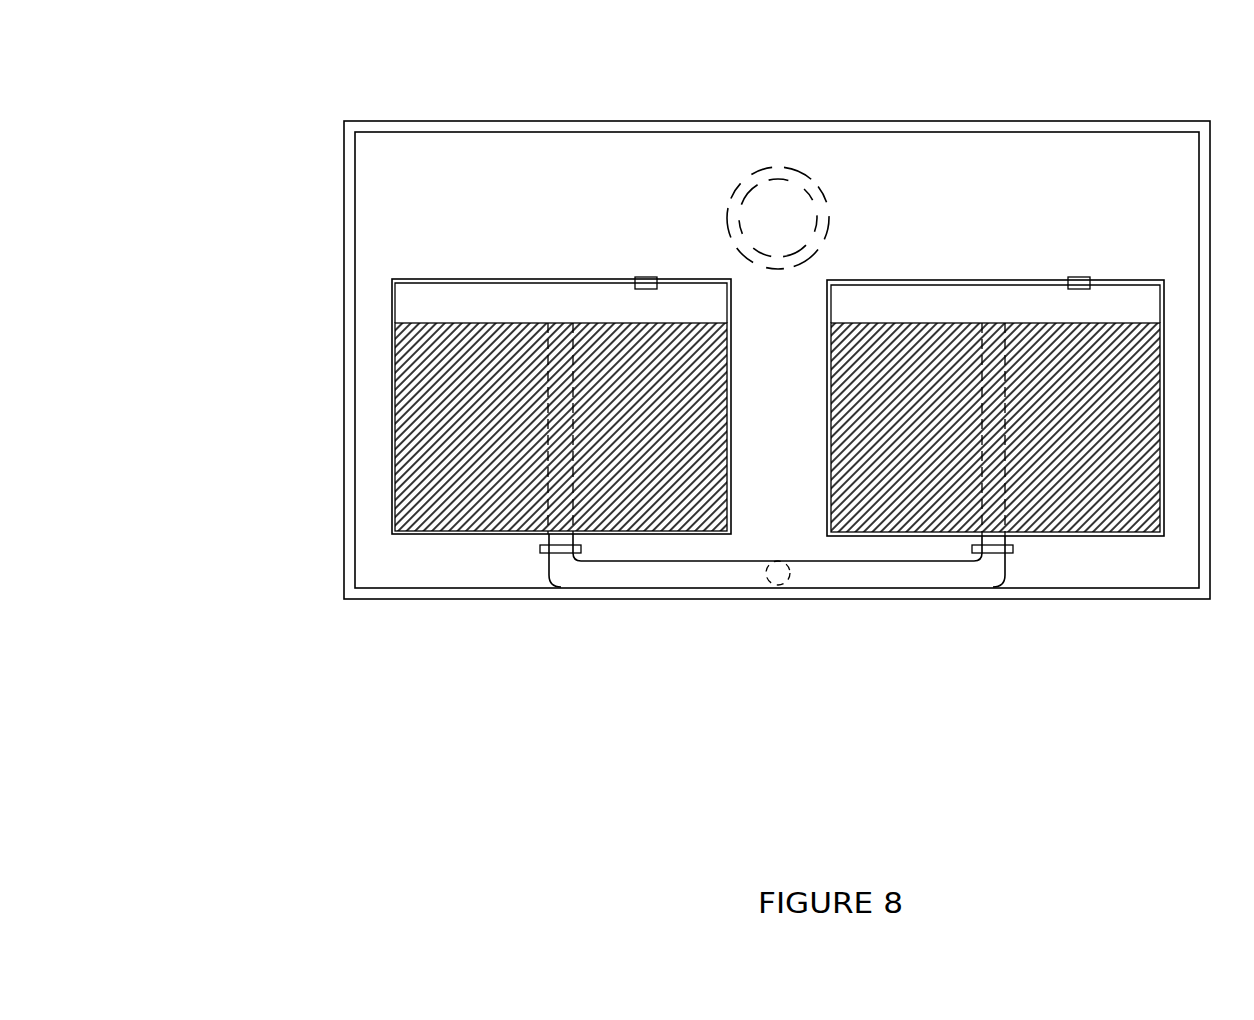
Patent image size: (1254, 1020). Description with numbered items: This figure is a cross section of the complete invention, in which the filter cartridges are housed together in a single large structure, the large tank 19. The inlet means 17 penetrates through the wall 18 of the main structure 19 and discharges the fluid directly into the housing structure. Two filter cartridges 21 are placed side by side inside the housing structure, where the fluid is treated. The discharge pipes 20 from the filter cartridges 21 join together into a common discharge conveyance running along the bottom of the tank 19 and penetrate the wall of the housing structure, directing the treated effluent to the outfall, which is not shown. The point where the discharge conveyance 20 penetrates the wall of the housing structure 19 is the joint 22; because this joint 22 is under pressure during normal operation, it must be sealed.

The inlet means 17 is at (741, 174).
The wall 18 is at (342, 366).
The large tank 19 is at (344, 120).
The discharge pipes 20 is at (682, 576).
The filter cartridges 21 is at (471, 402).
The joint 22 is at (781, 576).